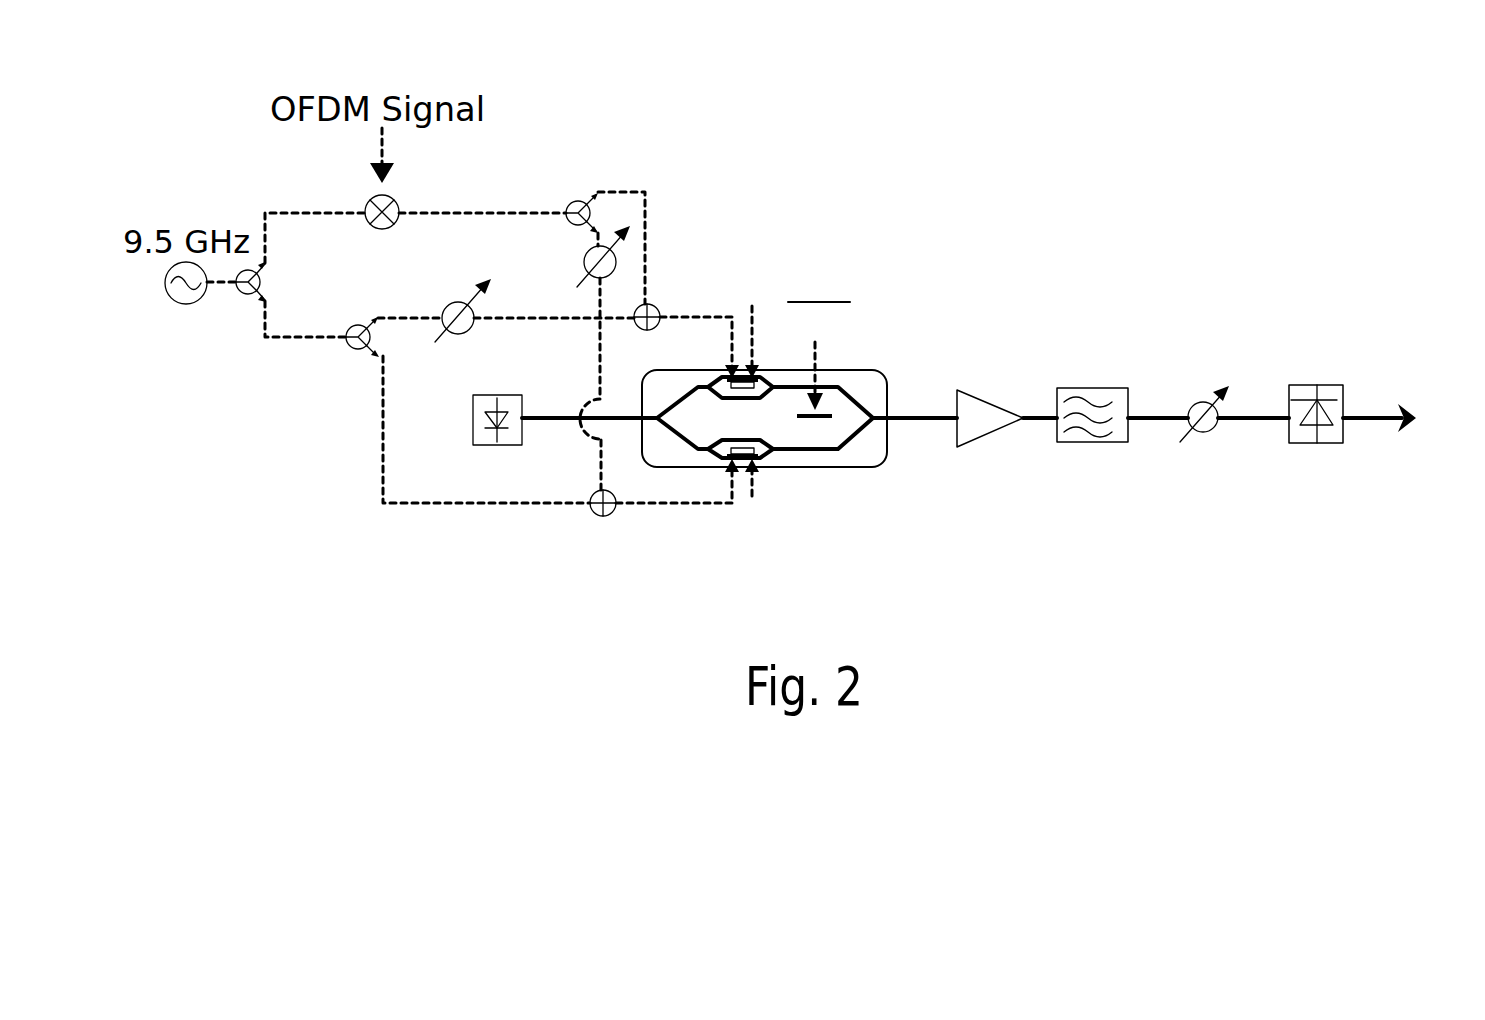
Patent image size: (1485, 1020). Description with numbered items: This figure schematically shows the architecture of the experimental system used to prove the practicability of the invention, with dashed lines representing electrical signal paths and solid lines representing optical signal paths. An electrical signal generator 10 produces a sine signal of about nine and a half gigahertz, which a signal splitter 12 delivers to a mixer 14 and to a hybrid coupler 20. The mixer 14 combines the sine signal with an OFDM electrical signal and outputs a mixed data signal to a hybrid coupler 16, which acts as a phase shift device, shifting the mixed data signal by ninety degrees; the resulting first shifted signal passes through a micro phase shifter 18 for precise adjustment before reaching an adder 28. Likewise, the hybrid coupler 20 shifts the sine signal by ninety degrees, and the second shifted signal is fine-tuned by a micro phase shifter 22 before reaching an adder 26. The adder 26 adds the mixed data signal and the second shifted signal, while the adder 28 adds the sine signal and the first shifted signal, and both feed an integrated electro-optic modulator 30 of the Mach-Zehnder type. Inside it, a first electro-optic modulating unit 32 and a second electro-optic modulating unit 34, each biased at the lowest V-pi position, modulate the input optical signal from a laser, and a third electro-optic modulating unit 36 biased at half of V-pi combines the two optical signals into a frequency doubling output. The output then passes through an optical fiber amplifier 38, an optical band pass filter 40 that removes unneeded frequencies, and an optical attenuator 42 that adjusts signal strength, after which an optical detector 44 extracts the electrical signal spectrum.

The electrical signal generator 10 is at (190, 305).
The signal splitter 12 is at (242, 296).
The mixer 14 is at (368, 232).
The hybrid coupler 16 is at (568, 200).
The micro phase shifter 18 is at (584, 262).
The hybrid coupler 20 is at (354, 349).
The micro phase shifter 22 is at (456, 336).
The adder 26 is at (660, 312).
The adder 28 is at (595, 517).
The integrated electro-optic modulator 30 is at (885, 353).
The first electro-optic modulating unit 32 is at (720, 389).
The second electro-optic modulating unit 34 is at (765, 463).
The third electro-optic modulating unit 36 is at (820, 423).
The optical fiber amplifier 38 is at (965, 388).
The optical band pass filter 40 is at (1080, 388).
The optical attenuator 42 is at (1205, 397).
The optical detector 44 is at (1302, 387).